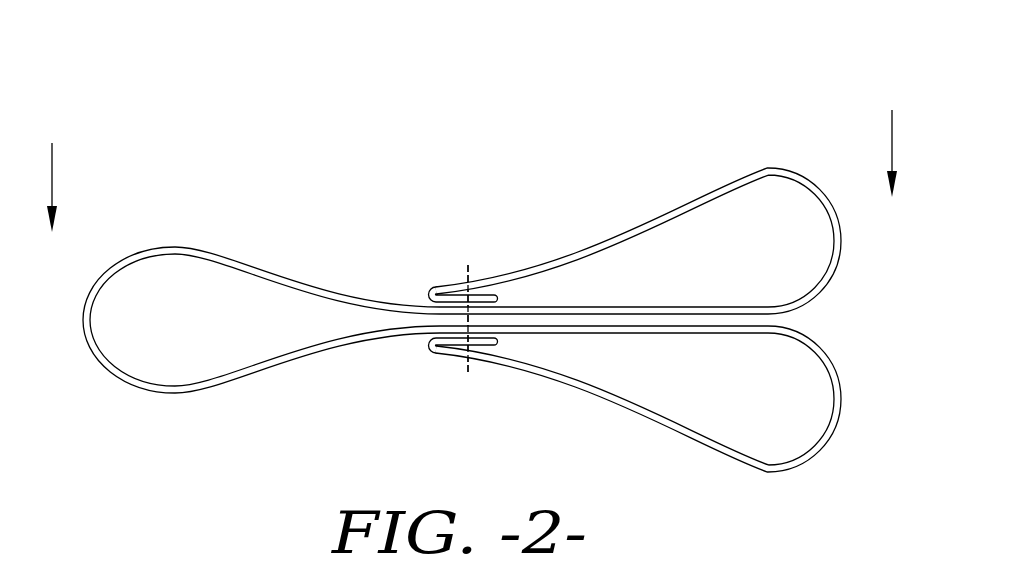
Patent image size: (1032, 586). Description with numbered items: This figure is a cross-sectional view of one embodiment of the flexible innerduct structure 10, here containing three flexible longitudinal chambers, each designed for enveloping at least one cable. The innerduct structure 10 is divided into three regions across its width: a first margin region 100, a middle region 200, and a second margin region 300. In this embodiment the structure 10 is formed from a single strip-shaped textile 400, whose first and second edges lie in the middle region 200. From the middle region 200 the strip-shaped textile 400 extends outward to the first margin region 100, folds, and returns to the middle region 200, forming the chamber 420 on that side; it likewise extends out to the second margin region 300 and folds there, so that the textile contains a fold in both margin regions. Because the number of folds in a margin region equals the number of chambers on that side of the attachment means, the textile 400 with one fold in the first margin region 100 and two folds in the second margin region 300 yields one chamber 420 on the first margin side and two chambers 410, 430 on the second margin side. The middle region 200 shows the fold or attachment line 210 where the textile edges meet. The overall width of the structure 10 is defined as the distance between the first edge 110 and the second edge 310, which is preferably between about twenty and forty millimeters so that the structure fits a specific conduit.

The innerduct structure 10 is at (313, 63).
The first margin region 100 is at (287, 182).
The first edge 110 is at (56, 171).
The middle region 200 is at (542, 208).
The fold line 210 is at (467, 363).
The second margin region 300 is at (852, 147).
The second edge 310 is at (895, 135).
The strip-shaped textile 400 is at (841, 247).
The flexible longitudinal chamber 410 is at (775, 255).
The flexible longitudinal chamber 420 is at (200, 333).
The flexible longitudinal chamber 430 is at (768, 409).